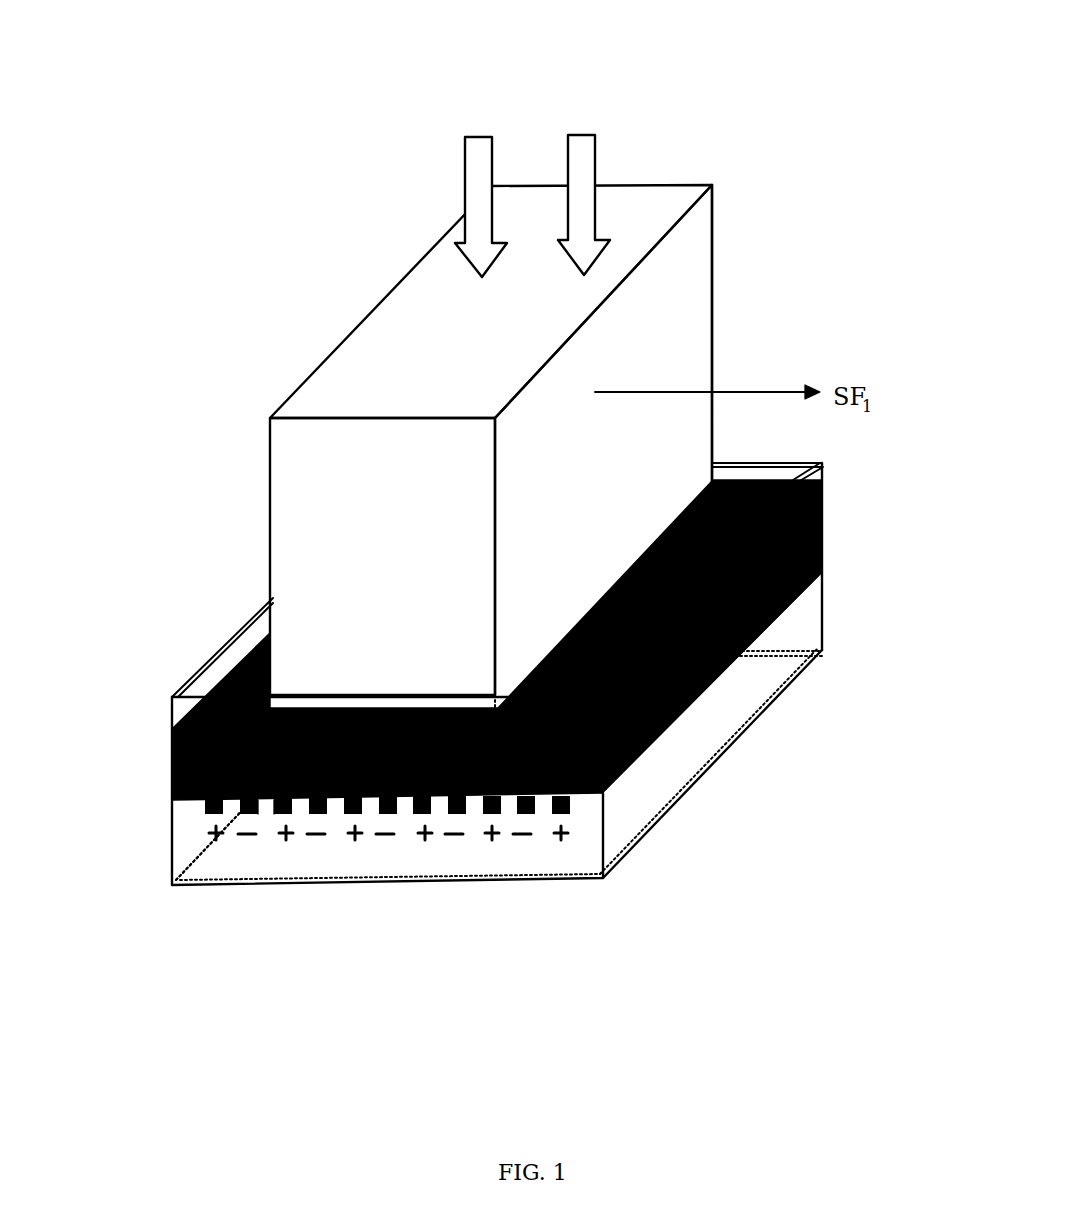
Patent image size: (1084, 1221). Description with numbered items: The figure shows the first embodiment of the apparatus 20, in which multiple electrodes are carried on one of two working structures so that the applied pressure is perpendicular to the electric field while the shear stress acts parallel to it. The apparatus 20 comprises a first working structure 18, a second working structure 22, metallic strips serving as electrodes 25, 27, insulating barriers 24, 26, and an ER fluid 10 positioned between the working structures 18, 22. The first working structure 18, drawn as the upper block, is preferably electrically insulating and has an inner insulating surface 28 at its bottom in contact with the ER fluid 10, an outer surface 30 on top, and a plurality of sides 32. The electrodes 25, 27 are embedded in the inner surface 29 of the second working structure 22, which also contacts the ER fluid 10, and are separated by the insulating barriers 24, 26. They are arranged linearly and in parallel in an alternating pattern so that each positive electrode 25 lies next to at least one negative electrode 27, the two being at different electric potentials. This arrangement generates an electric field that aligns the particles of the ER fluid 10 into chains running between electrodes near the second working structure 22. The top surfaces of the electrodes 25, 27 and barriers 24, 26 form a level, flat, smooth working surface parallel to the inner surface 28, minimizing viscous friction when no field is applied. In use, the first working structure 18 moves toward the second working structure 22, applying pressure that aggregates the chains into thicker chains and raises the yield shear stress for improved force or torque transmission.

The ER fluid 10 is at (758, 482).
The first working structure 18 is at (529, 405).
The apparatus 20 is at (378, 185).
The second working structure 22 is at (823, 613).
The insulating barrier 24 is at (292, 803).
The positive electrode 25 is at (352, 841).
The insulating barrier 26 is at (258, 802).
The negative electrode 27 is at (390, 841).
The inner insulating surface 28 is at (823, 510).
The inner surface 29 is at (193, 805).
The outer surface 30 is at (378, 340).
The sides 32 is at (685, 325).